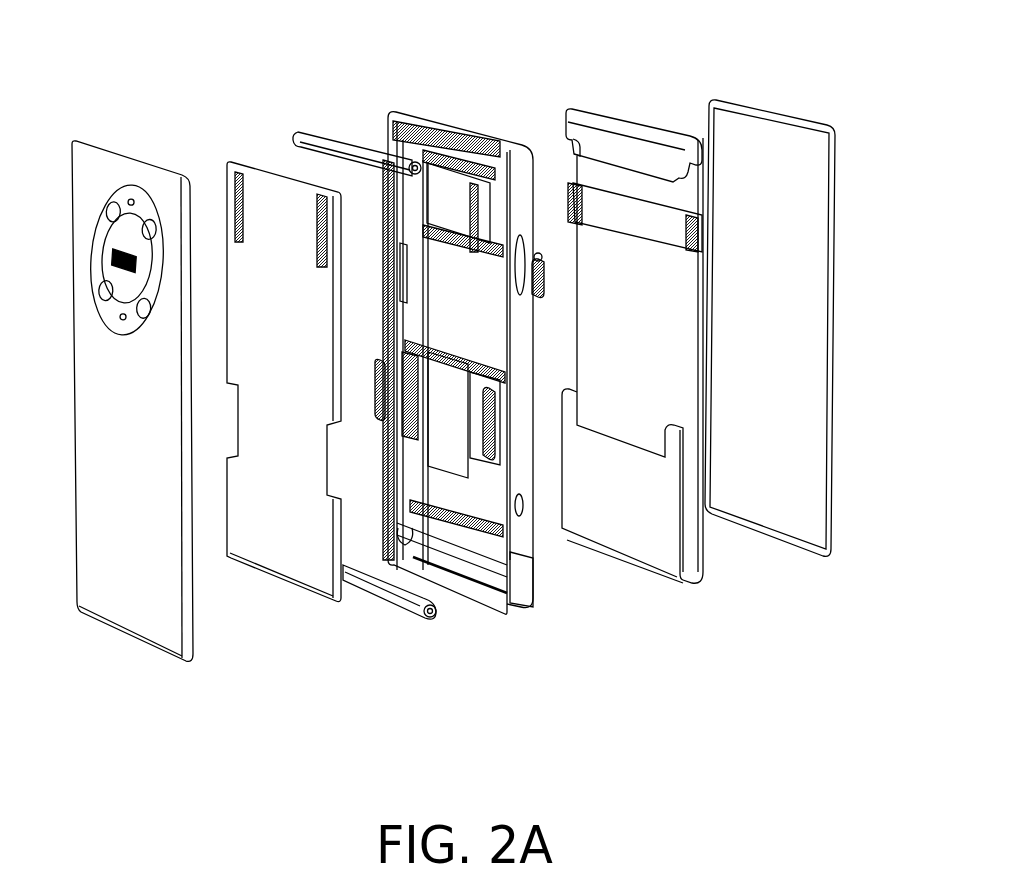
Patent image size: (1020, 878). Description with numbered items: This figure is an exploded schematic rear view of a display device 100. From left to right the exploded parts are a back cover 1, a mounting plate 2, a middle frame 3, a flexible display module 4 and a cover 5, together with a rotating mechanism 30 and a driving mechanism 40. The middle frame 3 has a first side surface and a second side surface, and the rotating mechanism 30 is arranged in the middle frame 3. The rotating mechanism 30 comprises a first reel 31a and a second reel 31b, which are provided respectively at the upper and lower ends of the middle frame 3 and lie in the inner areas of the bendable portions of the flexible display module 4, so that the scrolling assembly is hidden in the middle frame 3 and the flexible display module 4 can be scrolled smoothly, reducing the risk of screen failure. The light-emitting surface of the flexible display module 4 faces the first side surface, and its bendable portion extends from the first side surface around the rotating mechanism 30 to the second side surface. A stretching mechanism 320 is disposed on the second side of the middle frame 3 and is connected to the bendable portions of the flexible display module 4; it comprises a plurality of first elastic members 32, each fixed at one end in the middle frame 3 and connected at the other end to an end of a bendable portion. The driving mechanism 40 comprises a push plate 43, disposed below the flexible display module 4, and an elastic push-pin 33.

The display device 100 is at (76, 69).
The back cover 1 is at (90, 540).
The mounting plate 2 is at (302, 578).
The middle frame 3 is at (474, 125).
The flexible display module 4 is at (727, 417).
The cover 5 is at (786, 140).
The rotating mechanism 30 is at (443, 786).
The first reel 31a is at (307, 130).
The second reel 31b is at (432, 620).
The first elastic member 32 is at (563, 521).
The stretching mechanism 320 is at (497, 430).
The elastic push-pin 33 is at (539, 252).
The driving mechanism 40 is at (603, 778).
The push plate 43 is at (650, 233).